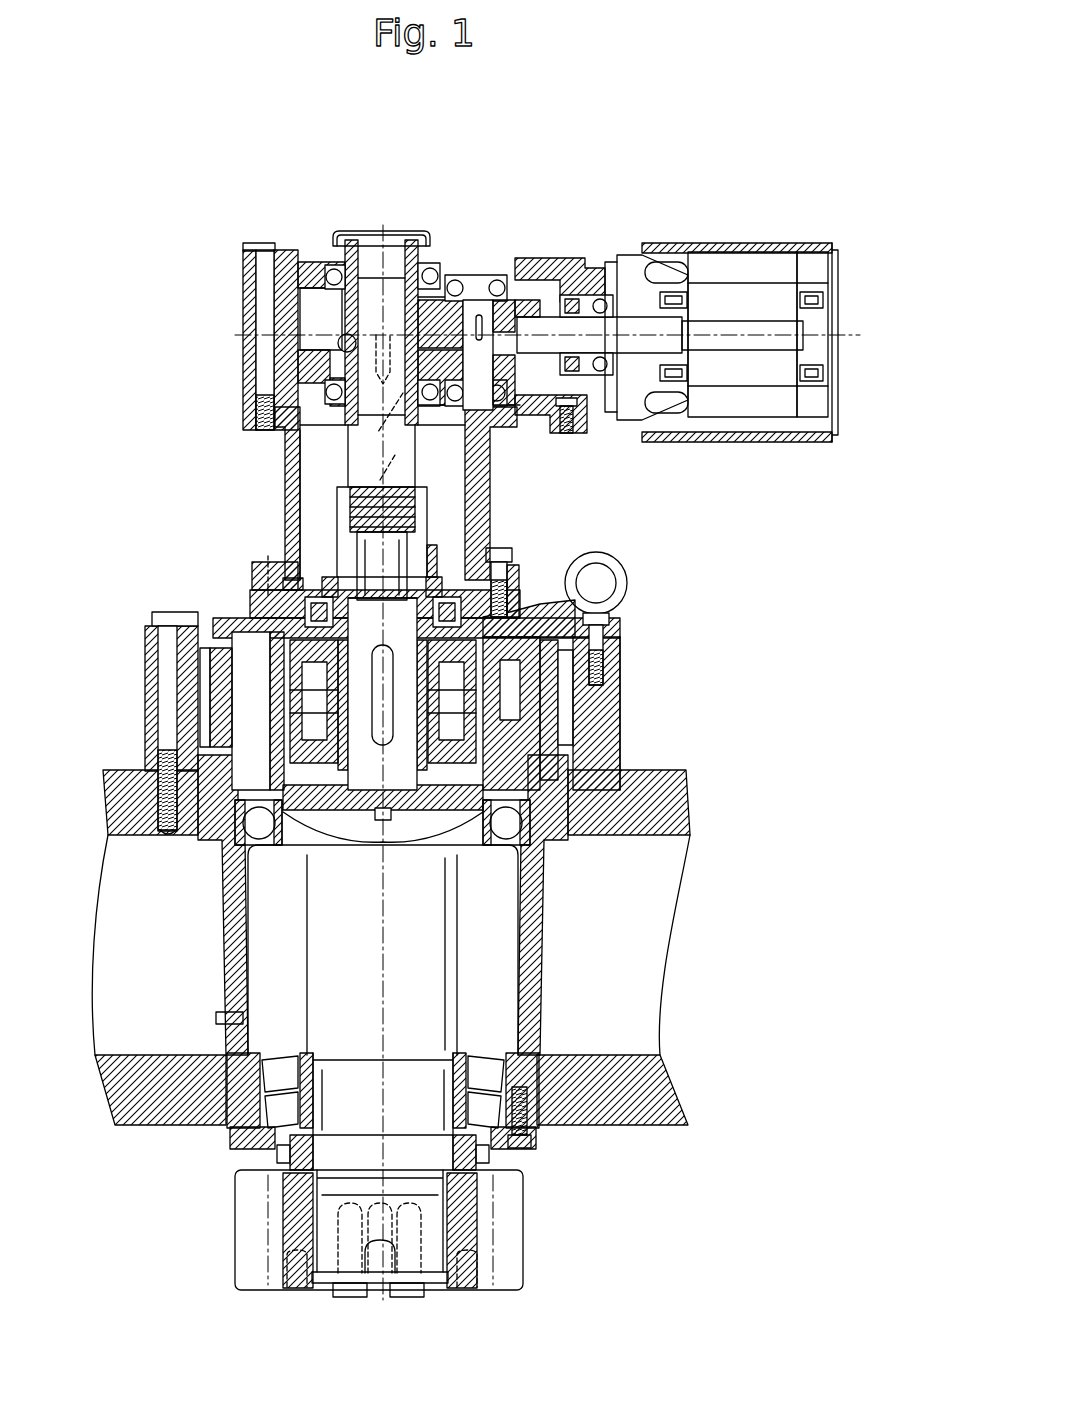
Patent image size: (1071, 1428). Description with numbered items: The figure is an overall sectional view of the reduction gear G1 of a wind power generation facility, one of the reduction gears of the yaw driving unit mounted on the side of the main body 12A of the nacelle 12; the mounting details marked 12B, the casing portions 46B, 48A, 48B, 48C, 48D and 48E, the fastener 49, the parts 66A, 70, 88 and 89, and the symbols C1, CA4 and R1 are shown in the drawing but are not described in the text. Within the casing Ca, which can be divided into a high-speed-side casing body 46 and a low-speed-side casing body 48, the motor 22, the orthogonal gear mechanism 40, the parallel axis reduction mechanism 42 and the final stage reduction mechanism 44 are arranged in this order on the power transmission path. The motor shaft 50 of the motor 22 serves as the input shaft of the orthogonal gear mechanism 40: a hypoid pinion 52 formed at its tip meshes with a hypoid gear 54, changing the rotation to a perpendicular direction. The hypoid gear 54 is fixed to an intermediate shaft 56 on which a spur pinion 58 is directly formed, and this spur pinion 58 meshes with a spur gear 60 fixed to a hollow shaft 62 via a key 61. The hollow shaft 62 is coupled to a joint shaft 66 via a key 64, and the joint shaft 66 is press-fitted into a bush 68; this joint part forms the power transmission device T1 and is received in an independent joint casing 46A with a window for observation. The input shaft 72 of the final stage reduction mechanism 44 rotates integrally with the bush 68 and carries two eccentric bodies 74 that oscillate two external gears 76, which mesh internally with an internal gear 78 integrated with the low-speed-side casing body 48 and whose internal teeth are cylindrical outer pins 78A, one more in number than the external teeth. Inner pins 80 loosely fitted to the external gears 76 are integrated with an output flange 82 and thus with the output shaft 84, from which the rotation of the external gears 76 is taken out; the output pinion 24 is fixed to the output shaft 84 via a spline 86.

The nacelle 12 is at (99, 878).
The main body of the nacelle 12A is at (112, 790).
The bolt hole 12B is at (165, 815).
The motor 22 is at (760, 246).
The output pinion 24 is at (513, 1248).
The orthogonal gear mechanism 40 is at (553, 243).
The parallel axis reduction mechanism 42 is at (507, 374).
The final stage reduction mechanism 44 is at (548, 833).
The high-speed-side casing body 46 is at (500, 470).
The joint casing 46A is at (512, 572).
The flange of clutch housing 46B is at (253, 565).
The low-speed-side casing body 48 is at (632, 678).
The casing flange 48A is at (503, 602).
The casing flange 48B is at (250, 585).
The casing flange 48C is at (168, 735).
The eye bolt 48D is at (560, 625).
The casing portion 48E is at (283, 567).
The bolt 49 is at (167, 665).
The motor shaft 50 is at (647, 345).
The hypoid pinion 52 is at (512, 300).
The hypoid gear 54 is at (456, 278).
The intermediate shaft 56 is at (477, 372).
The spur pinion 58 is at (557, 422).
The spur gear 60 is at (305, 367).
The key 61 is at (346, 342).
The hollow shaft 62 is at (360, 238).
The key 64 is at (380, 430).
The joint shaft 66 is at (367, 471).
The flange of hollow shaft 66A is at (434, 557).
The bush 68 is at (340, 502).
The intermediate shaft 70 is at (408, 560).
The input shaft 72 is at (360, 615).
The eccentric bodies 74 is at (457, 695).
The external gears 76 is at (322, 683).
The internal gear 78 is at (186, 694).
The outer pins 78A is at (196, 715).
The inner pins 80 is at (555, 733).
The output flange 82 is at (600, 760).
The output shaft 84 is at (433, 1013).
The spline 86 is at (450, 1203).
The bolt 88 is at (507, 557).
The seal 89 is at (338, 580).
The clutch C1 is at (318, 516).
The cover CA4 is at (285, 346).
The casing Ca is at (637, 645).
The reduction gear G1 is at (735, 178).
The reduction gear R1 is at (403, 592).
The power transmission device T1 is at (433, 516).